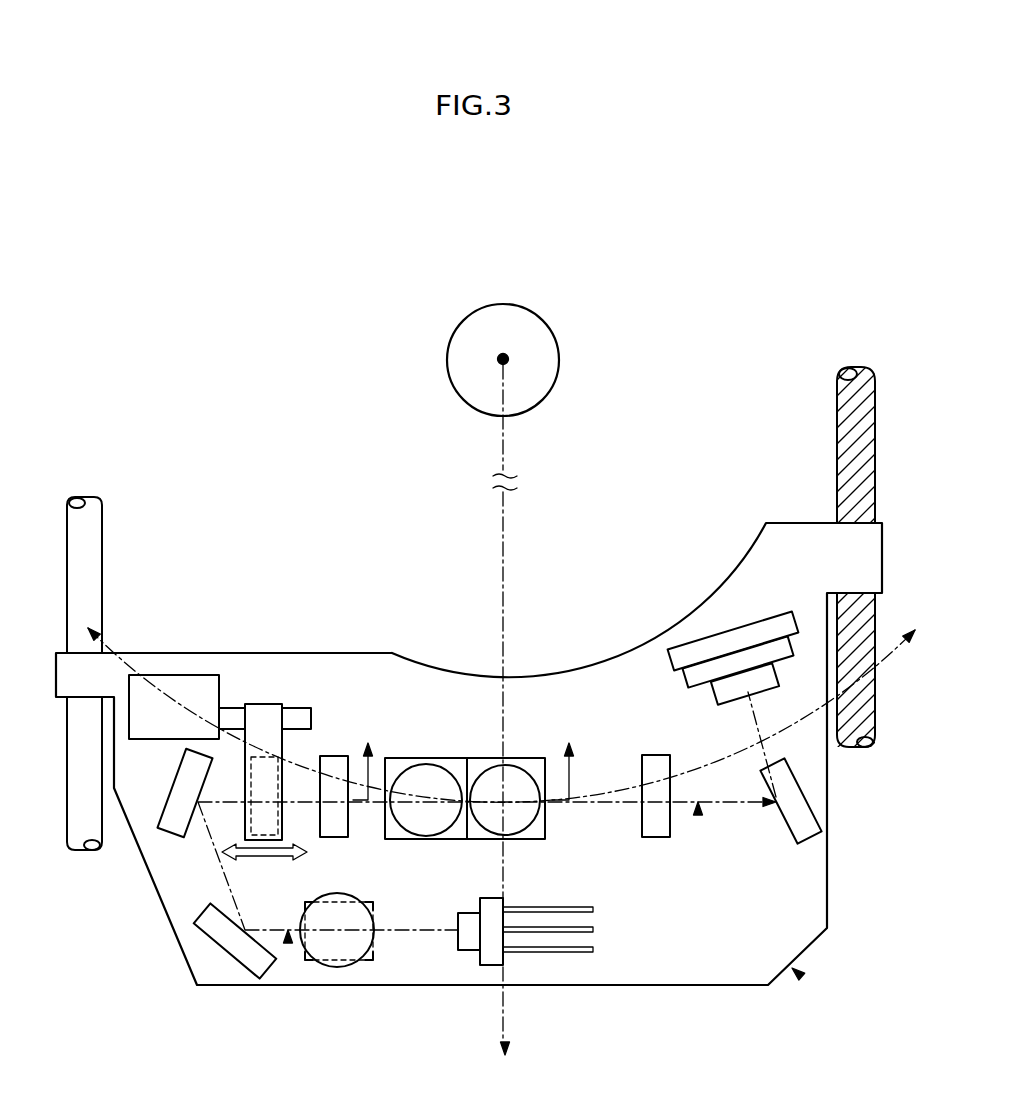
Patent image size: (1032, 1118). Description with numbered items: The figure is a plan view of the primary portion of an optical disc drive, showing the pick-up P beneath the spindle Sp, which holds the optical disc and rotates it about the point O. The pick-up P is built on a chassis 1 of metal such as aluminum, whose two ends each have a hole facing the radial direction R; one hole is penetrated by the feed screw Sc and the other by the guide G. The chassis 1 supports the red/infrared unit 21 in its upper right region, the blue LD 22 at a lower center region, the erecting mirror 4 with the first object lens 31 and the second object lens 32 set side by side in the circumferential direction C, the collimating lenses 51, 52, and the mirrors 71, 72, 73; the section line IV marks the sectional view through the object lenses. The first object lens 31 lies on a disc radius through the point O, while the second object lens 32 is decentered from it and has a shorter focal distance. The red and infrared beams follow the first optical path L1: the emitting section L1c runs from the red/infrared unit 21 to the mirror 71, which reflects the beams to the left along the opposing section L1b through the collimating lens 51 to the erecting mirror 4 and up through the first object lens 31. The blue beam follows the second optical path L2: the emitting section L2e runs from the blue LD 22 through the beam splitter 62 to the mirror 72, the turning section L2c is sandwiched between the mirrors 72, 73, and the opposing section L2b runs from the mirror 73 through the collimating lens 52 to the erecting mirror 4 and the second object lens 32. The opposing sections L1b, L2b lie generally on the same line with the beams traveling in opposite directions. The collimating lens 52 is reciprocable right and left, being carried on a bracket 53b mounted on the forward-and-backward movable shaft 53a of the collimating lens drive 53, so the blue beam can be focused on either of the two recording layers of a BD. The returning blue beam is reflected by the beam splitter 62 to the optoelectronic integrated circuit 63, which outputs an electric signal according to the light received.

The chassis 1 is at (712, 975).
The erecting mirror 4 is at (527, 765).
The red/infrared unit 21 is at (727, 642).
The blue LD 22 is at (490, 953).
The first object lens 31 is at (493, 778).
The second object lens 32 is at (425, 778).
The collimating lens 51 is at (655, 760).
The collimating lens 52 is at (253, 757).
The collimating lens drive 53 is at (178, 673).
The shaft 53a is at (302, 713).
The bracket 53b is at (275, 713).
The beam splitter 62 is at (372, 958).
The optoelectronic integrated circuit 63 is at (333, 967).
The mirror 71 is at (797, 798).
The mirror 72 is at (222, 940).
The mirror 73 is at (172, 823).
The guide G is at (77, 760).
The feed screw Sc is at (868, 422).
The spindle Sp is at (553, 335).
The point O is at (500, 357).
The circumferential direction C is at (880, 663).
The pick-up P is at (804, 975).
The radial direction R is at (507, 1030).
The section line IV is at (468, 754).
The first optical path L1 is at (698, 815).
The opposing section L1b is at (612, 803).
The emitting section L1c is at (757, 770).
The second optical path L2 is at (288, 943).
The opposing section L2b is at (355, 803).
The turning section L2c is at (225, 873).
The emitting section L2e is at (423, 930).